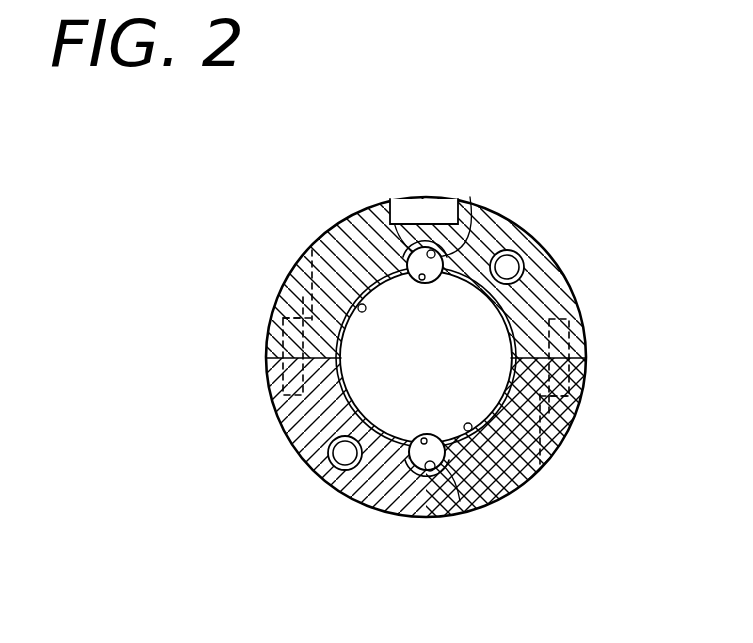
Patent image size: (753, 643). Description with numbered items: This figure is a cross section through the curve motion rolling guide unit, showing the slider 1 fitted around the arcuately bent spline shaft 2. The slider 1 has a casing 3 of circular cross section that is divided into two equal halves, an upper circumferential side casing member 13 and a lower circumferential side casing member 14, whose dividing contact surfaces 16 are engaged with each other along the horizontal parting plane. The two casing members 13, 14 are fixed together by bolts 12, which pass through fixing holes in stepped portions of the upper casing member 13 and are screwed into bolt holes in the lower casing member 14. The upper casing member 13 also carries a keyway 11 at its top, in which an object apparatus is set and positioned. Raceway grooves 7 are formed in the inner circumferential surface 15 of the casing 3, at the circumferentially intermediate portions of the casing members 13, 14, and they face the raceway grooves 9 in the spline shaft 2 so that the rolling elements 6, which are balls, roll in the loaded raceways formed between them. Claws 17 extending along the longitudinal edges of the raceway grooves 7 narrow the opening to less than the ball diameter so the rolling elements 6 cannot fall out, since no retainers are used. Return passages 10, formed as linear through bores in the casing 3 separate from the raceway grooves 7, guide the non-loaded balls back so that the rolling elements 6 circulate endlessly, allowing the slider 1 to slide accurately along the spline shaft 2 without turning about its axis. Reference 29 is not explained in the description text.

The slider 1 is at (556, 239).
The spline shaft 2 is at (483, 395).
The casing 3 is at (332, 243).
The rolling elements 6 is at (406, 248).
The raceway grooves 7 is at (443, 253).
The raceway grooves 9 is at (425, 281).
The return passages 10 is at (509, 258).
The keyway 11 is at (403, 200).
The bolts 12 is at (280, 352).
The upper circumferential side casing member 13 is at (333, 282).
The lower circumferential side casing member 14 is at (533, 428).
The inner circumferential surface 15 is at (335, 305).
The dividing contact surfaces 16 is at (287, 357).
The claws 17 is at (350, 245).
The slot 29 is at (283, 308).